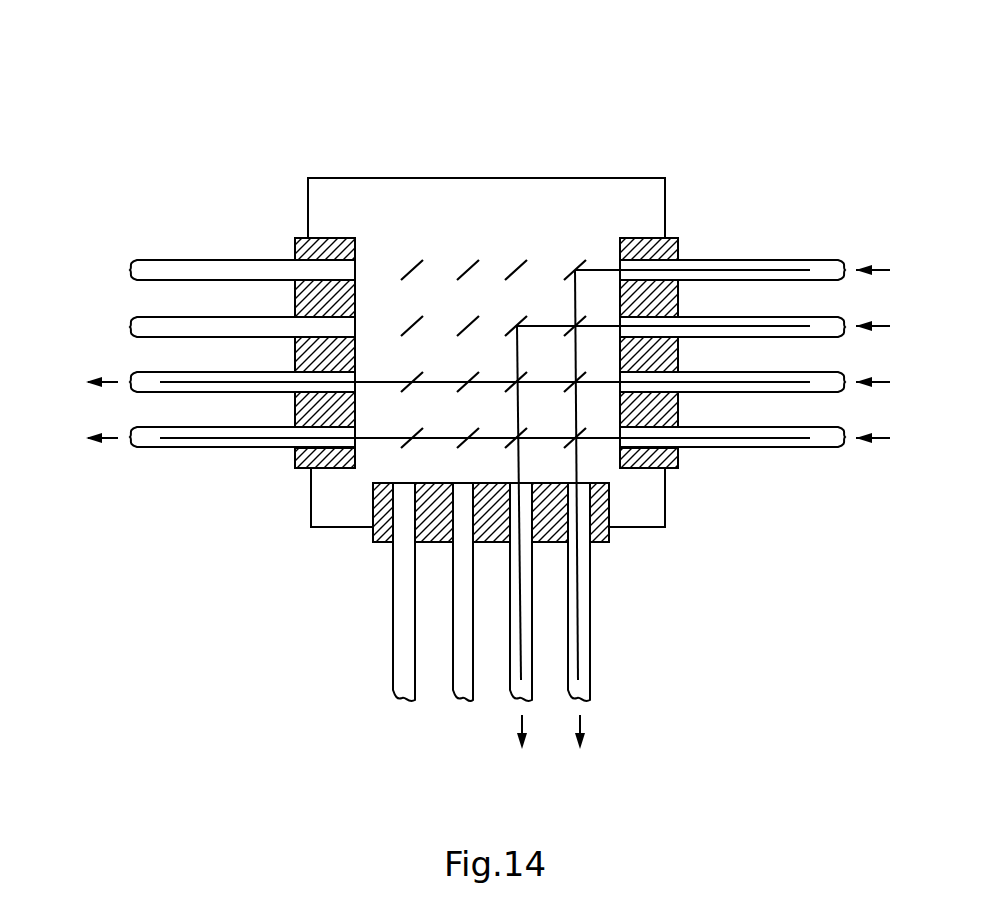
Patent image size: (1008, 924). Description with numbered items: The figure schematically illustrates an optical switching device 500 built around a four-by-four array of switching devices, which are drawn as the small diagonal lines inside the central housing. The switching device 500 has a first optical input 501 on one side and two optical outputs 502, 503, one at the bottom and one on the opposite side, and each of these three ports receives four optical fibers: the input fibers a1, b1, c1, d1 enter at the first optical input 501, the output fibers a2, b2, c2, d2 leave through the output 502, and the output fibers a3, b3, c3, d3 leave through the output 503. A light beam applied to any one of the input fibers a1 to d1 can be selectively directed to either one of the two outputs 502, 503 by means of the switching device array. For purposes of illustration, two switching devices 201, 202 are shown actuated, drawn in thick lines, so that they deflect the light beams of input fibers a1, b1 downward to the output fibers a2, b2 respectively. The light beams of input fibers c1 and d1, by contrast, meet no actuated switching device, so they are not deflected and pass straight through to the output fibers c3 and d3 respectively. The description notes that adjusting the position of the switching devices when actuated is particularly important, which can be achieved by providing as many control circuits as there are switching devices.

The optical switching device 500 is at (340, 100).
The first optical input 501 is at (678, 243).
The optical output 502 is at (610, 540).
The optical output 503 is at (298, 458).
The switching device 201 is at (575, 270).
The switching device 202 is at (517, 326).
The input fiber a1 is at (824, 262).
The input fiber b1 is at (824, 319).
The input fiber c1 is at (824, 376).
The input fiber d1 is at (824, 433).
The output fiber a2 is at (578, 687).
The output fiber b2 is at (517, 687).
The output fiber c2 is at (459, 687).
The output fiber d2 is at (403, 687).
The output fiber a3 is at (148, 262).
The output fiber b3 is at (148, 319).
The output fiber c3 is at (148, 376).
The output fiber d3 is at (148, 433).